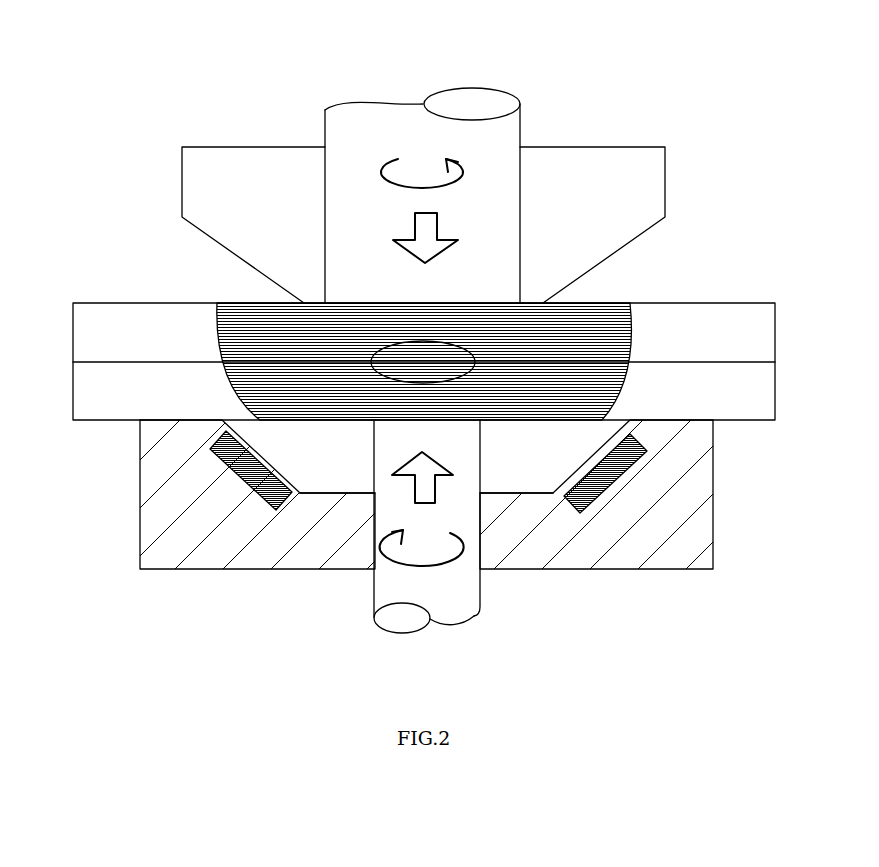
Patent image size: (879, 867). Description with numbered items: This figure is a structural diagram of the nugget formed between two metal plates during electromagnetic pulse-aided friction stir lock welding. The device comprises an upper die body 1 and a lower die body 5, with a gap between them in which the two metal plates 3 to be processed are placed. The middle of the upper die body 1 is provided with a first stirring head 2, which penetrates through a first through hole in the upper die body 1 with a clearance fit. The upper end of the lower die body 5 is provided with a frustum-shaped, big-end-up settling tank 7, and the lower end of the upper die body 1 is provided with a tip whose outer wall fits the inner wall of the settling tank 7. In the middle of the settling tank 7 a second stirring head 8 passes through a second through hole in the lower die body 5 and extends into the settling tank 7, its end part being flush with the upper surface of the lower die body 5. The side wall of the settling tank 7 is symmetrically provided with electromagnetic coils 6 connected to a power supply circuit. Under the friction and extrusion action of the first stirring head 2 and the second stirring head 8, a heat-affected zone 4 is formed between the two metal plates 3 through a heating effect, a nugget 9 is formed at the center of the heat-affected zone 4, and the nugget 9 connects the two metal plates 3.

The upper die body 1 is at (207, 193).
The first stirring head 2 is at (327, 110).
The metal plate 3 is at (137, 327).
The heat-affected zone 4 is at (575, 387).
The lower die body 5 is at (690, 527).
The electromagnetic coil 6 is at (593, 497).
The settling tank 7 is at (492, 488).
The second stirring head 8 is at (443, 603).
The nugget 9 is at (425, 363).